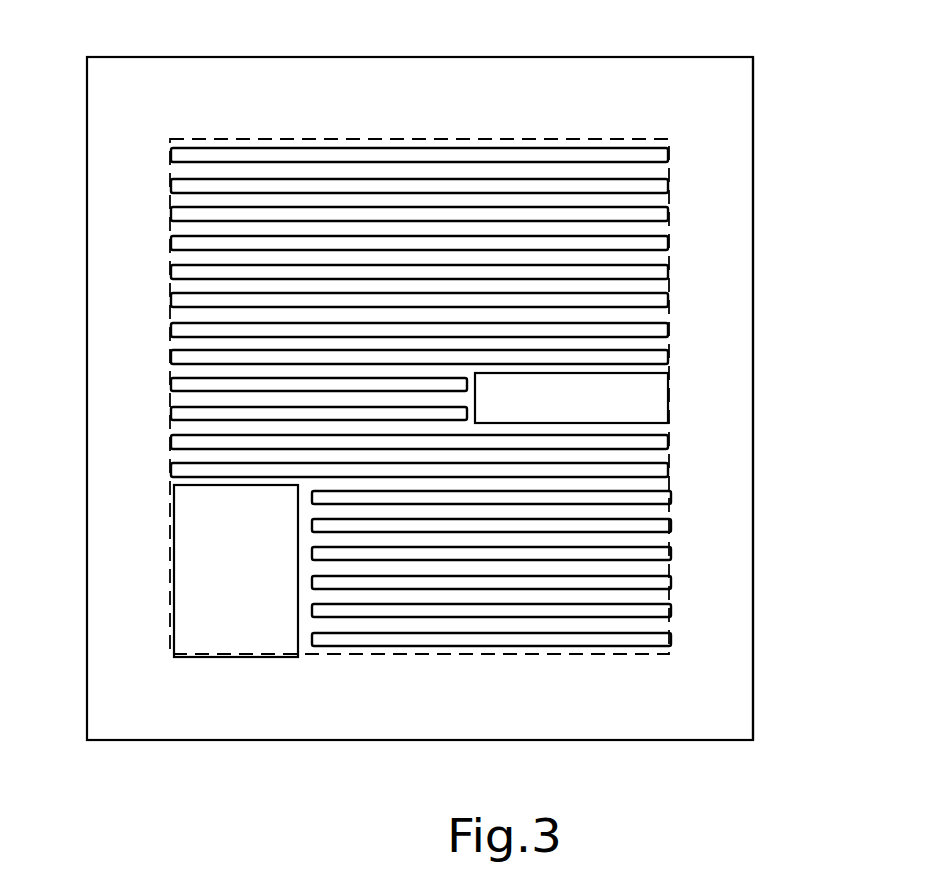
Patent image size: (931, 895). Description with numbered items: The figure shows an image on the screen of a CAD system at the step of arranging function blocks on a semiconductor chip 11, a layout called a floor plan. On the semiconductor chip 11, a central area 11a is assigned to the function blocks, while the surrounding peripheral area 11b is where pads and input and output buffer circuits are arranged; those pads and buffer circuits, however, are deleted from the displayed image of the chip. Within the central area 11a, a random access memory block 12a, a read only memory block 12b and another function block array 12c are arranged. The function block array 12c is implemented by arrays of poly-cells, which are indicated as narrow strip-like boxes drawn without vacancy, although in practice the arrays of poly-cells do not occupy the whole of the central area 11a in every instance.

The semiconductor chip 11 is at (84, 423).
The central area 11a is at (432, 138).
The peripheral area 11b is at (728, 333).
The random access memory block 12a is at (236, 650).
The read only memory block 12b is at (660, 396).
The function block array 12c is at (668, 182).